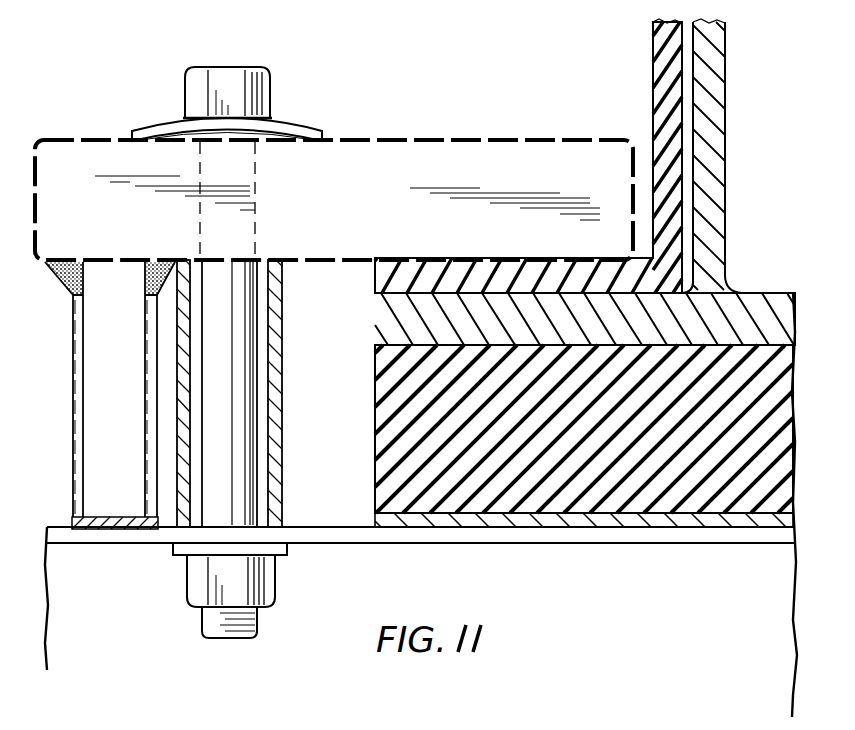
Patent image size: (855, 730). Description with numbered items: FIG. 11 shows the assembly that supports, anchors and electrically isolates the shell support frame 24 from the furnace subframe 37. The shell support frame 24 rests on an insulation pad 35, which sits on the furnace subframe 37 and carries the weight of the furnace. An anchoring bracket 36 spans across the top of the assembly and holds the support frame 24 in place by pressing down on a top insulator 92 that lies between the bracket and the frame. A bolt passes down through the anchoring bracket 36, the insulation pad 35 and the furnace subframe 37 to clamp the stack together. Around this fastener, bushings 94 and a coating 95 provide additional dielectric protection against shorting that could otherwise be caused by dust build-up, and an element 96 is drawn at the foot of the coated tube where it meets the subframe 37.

The anchoring bracket 36 is at (80, 165).
The top insulator 92 is at (667, 97).
The shell support frame 24 is at (718, 177).
The coating 95 is at (74, 345).
The bushings 94 is at (283, 503).
The gasket 96 is at (105, 522).
The furnace subframe 37 is at (547, 543).
The insulation pad 35 is at (739, 483).